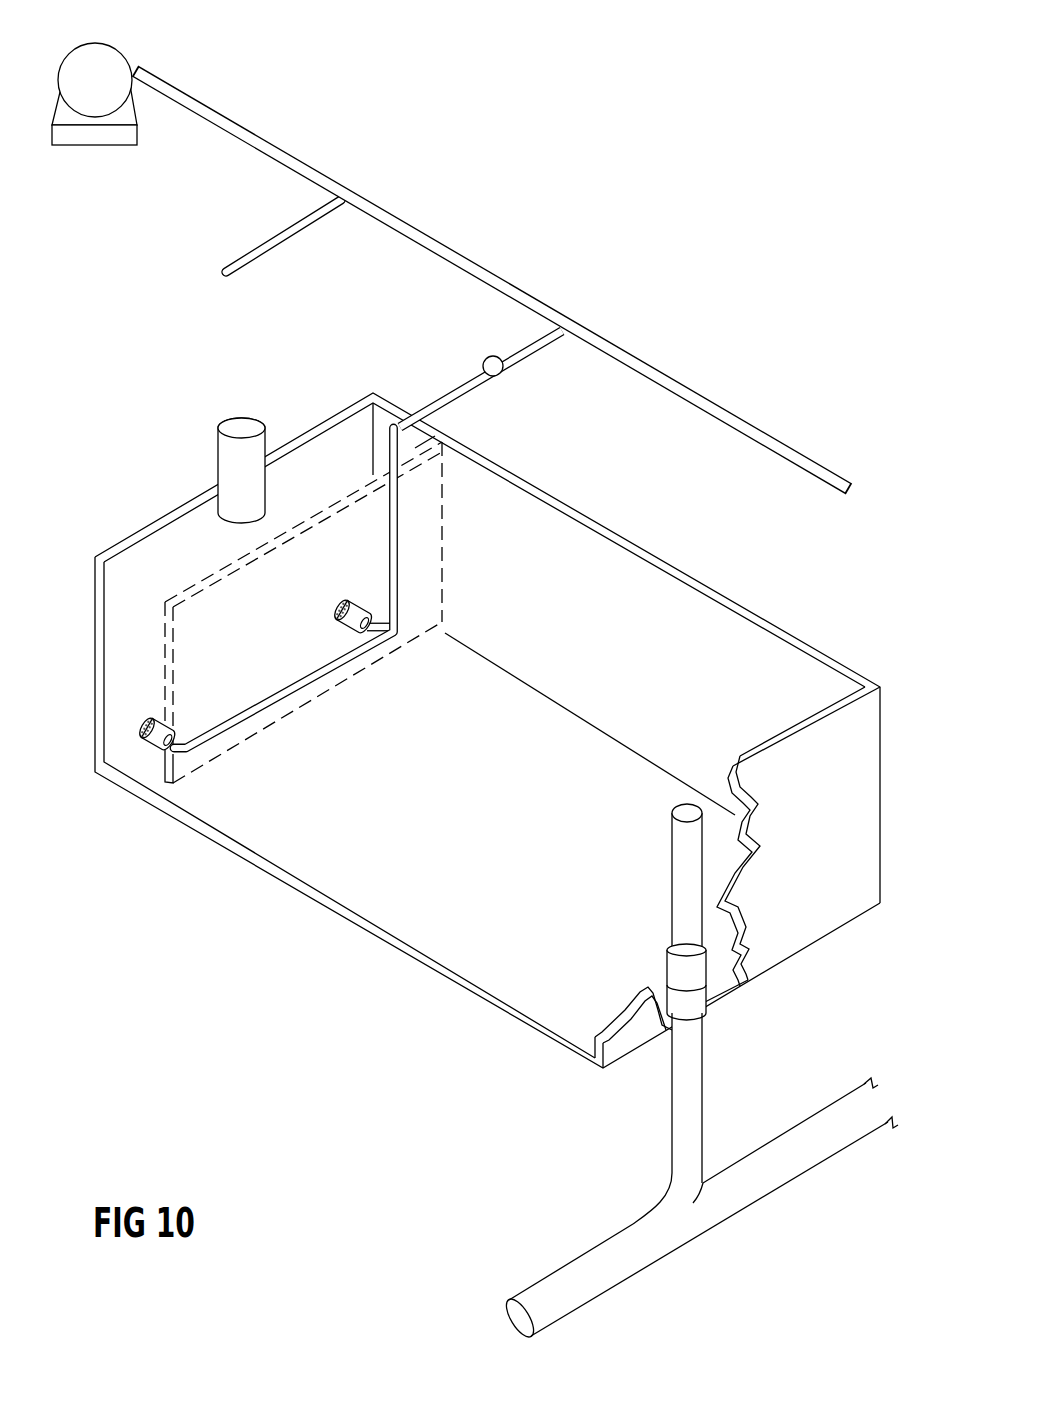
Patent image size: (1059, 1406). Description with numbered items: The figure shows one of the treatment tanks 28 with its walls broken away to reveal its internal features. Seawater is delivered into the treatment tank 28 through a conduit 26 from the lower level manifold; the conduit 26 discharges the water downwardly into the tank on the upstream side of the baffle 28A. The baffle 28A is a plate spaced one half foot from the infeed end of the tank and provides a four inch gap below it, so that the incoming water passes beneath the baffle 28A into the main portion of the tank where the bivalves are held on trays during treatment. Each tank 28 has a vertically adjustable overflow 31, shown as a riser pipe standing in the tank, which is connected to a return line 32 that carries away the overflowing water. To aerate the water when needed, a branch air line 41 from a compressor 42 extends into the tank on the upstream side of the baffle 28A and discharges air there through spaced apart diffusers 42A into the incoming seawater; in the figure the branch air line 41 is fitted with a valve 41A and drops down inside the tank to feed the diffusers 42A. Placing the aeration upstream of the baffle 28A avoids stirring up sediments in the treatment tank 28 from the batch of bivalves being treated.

The compressor 42 is at (110, 44).
The branch air line 41 is at (452, 398).
The valve 41A is at (493, 355).
The conduit 26 is at (217, 456).
The diffusers 42A is at (332, 614).
The treatment tank 28 is at (622, 655).
The baffle 28A is at (185, 770).
The vertically adjustable overflow 31 is at (667, 875).
The return line 32 is at (591, 1249).